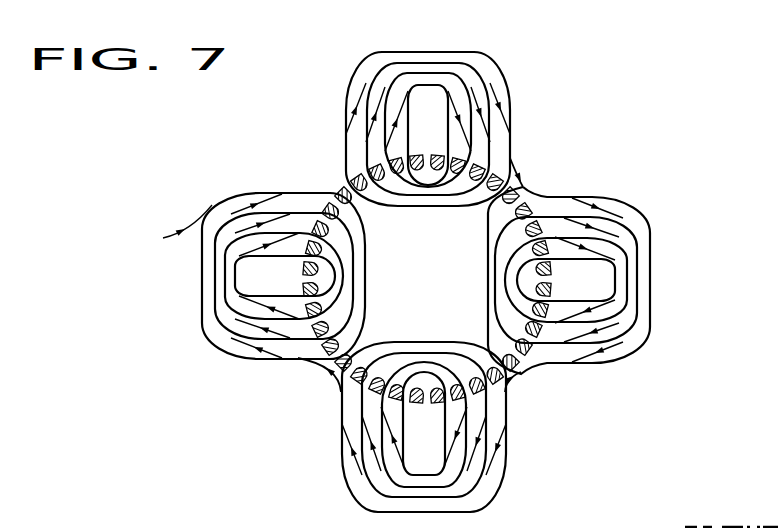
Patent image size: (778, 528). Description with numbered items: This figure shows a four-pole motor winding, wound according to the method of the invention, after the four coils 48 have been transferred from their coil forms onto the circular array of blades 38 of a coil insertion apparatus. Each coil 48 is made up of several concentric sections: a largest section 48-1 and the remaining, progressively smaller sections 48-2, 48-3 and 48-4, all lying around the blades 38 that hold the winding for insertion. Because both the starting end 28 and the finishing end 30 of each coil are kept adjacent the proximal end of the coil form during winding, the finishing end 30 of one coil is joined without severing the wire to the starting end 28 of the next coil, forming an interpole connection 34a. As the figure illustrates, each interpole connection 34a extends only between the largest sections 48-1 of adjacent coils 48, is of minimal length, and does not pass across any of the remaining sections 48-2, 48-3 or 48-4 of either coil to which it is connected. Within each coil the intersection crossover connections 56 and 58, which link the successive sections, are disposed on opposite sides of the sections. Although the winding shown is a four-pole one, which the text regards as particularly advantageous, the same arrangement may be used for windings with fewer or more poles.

The starting end 28 is at (190, 222).
The finishing end 30 is at (238, 190).
The interpole connection 34a is at (535, 172).
The blades of coil insertion apparatus 38 is at (340, 178).
The coil 48 is at (429, 105).
The largest section 48-1 is at (475, 129).
The remaining section 48-2 is at (440, 103).
The remaining section 48-3 is at (389, 106).
The remaining section 48-4 is at (351, 122).
The intersection crossover connection 56 is at (502, 117).
The intersection crossover connection 58 is at (358, 117).